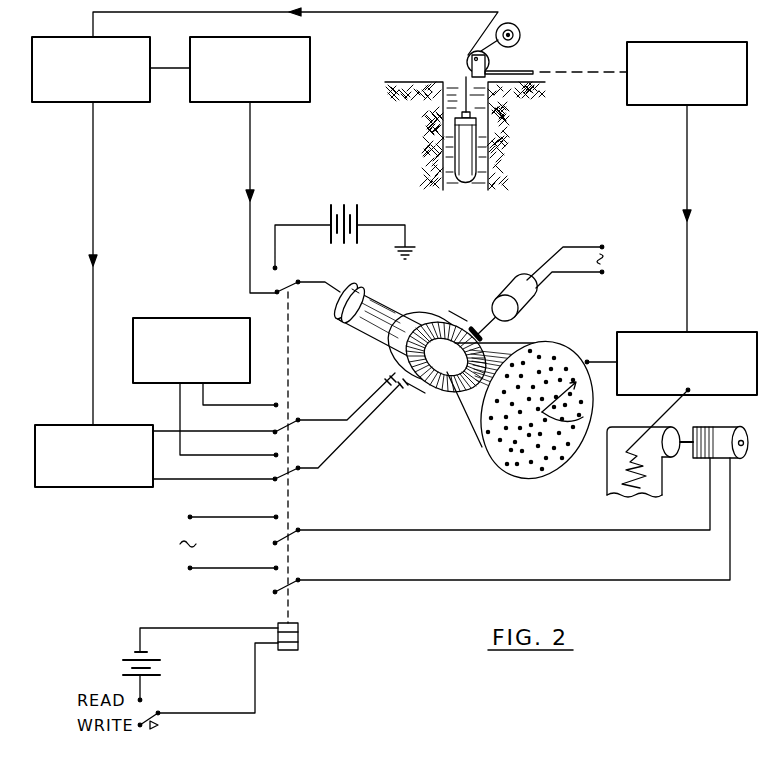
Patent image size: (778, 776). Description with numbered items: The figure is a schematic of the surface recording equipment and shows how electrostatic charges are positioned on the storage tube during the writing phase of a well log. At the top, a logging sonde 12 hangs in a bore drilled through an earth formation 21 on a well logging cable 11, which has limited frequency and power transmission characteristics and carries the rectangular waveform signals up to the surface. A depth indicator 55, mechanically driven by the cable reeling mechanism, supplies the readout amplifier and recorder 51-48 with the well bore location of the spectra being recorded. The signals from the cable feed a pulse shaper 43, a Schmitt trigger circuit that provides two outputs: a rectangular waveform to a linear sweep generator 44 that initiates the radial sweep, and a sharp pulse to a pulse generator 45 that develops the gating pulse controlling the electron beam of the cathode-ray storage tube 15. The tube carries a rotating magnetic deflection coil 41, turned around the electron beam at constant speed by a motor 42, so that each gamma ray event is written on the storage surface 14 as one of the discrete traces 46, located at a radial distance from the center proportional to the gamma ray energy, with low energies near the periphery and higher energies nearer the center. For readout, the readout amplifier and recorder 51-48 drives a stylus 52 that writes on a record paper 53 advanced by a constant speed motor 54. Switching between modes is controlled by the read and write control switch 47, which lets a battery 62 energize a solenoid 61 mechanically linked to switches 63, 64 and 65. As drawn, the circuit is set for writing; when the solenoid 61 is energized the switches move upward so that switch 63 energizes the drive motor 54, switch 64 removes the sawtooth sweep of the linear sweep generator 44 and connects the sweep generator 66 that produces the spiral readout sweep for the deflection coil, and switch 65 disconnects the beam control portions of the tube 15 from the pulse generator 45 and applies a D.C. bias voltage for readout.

The well logging cable 11 is at (464, 76).
The logging sonde 12 is at (466, 183).
The earth formation 21 is at (417, 152).
The pulse shaper 43 is at (127, 103).
The pulse generator 45 is at (287, 103).
The depth indicator 55 is at (690, 42).
The sweep generator 66 is at (190, 317).
The linear sweep generator 44 is at (93, 488).
The readout amplifier and recorder 51-48 is at (650, 332).
The cathode-ray storage tube 15 is at (375, 343).
The rotating magnetic deflection coil 41 is at (445, 303).
The motor 42 is at (513, 283).
The storage surface 14 is at (522, 418).
The discrete traces 46 is at (493, 460).
The stylus 52 is at (661, 427).
The record paper 53 is at (607, 478).
The constant speed motor 54 is at (728, 427).
The switch 65 is at (282, 283).
The switch 64 is at (299, 452).
The switch 63 is at (299, 564).
The solenoid 61 is at (299, 632).
The battery 62 is at (137, 654).
The read and write control switch 47 is at (155, 712).